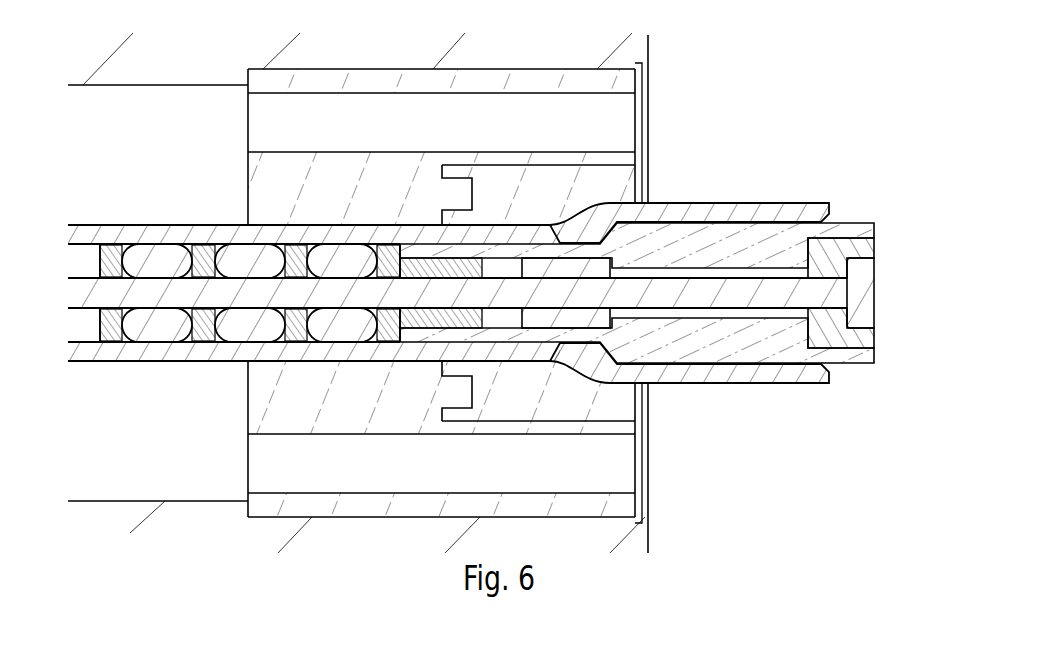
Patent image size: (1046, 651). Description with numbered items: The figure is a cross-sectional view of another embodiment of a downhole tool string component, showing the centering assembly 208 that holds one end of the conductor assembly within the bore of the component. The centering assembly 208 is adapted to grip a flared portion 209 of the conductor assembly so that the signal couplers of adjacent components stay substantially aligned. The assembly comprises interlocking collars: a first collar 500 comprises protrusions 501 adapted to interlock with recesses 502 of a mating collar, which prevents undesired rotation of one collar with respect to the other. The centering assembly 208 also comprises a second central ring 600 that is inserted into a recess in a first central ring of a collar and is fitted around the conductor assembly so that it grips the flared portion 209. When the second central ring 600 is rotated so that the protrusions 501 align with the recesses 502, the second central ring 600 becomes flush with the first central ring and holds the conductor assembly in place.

The second centering assembly 208 is at (532, 56).
The flared portion 209 is at (598, 380).
The first collar 500 is at (308, 193).
The protrusions 501 is at (458, 392).
The recesses 502 is at (460, 426).
The second central ring 600 is at (583, 191).